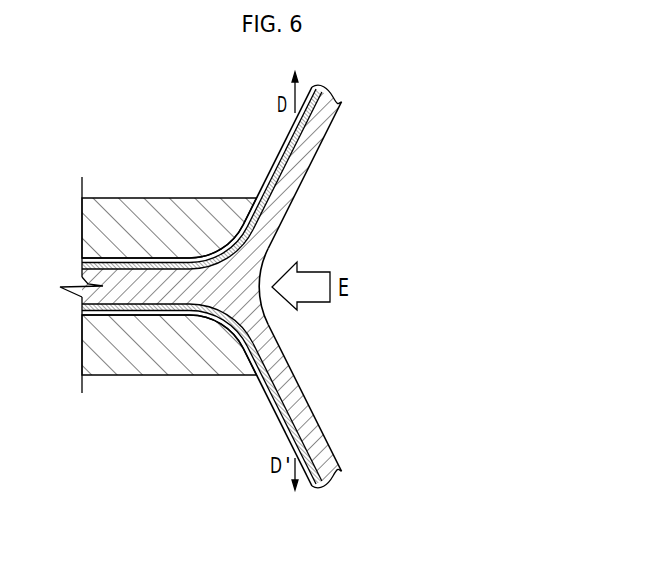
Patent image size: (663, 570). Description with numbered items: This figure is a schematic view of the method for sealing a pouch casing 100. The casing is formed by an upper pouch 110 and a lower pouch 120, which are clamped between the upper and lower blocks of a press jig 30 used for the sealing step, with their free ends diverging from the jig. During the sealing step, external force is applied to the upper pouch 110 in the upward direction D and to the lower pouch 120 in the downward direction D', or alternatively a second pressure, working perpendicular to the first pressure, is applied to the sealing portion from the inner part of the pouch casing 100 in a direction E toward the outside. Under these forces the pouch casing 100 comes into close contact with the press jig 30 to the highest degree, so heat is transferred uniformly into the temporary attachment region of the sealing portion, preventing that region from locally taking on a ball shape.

The press jig 30 is at (224, 178).
The pouch casing 100 is at (427, 101).
The upper pouch 110 is at (355, 113).
The lower pouch 120 is at (355, 462).